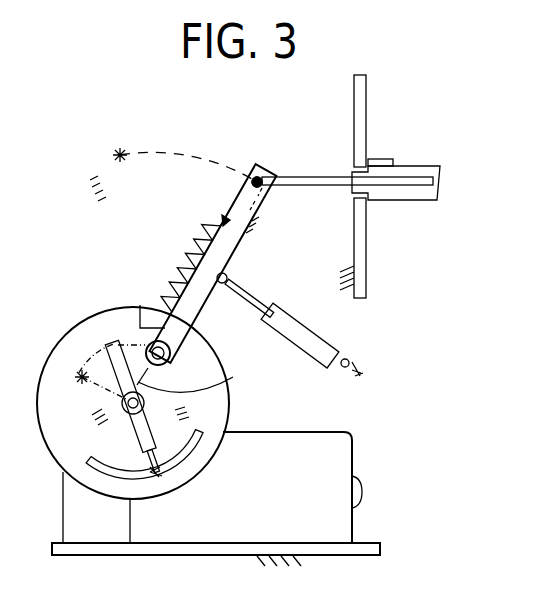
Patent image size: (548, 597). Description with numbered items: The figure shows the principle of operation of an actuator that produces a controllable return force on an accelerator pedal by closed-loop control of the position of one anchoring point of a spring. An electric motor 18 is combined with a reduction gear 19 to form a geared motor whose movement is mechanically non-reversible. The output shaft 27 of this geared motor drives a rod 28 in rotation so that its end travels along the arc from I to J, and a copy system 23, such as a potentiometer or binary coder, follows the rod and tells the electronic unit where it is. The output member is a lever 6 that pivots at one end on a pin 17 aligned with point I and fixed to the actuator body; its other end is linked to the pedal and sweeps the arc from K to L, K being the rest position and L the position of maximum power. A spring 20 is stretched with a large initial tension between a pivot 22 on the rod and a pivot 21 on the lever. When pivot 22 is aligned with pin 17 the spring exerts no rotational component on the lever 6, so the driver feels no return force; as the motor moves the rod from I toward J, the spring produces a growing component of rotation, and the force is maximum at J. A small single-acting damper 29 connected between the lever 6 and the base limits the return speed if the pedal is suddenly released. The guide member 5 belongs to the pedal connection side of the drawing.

The feed rod and guide block 5 is at (405, 166).
The lever 6 is at (233, 270).
The pin 17 is at (175, 347).
The electric motor 18 is at (337, 431).
The reduction gear 19 is at (224, 418).
The spring 20 is at (178, 268).
The pivot 21 is at (228, 219).
The pivot 22 is at (78, 347).
The copy system 23 is at (108, 482).
The output shaft 27 is at (118, 402).
The rod 28 is at (202, 379).
The single-acting damper 29 is at (322, 332).
The position of rest K is at (120, 153).
The position of maximum power L is at (264, 164).
The point I is at (176, 369).
The position J is at (72, 386).